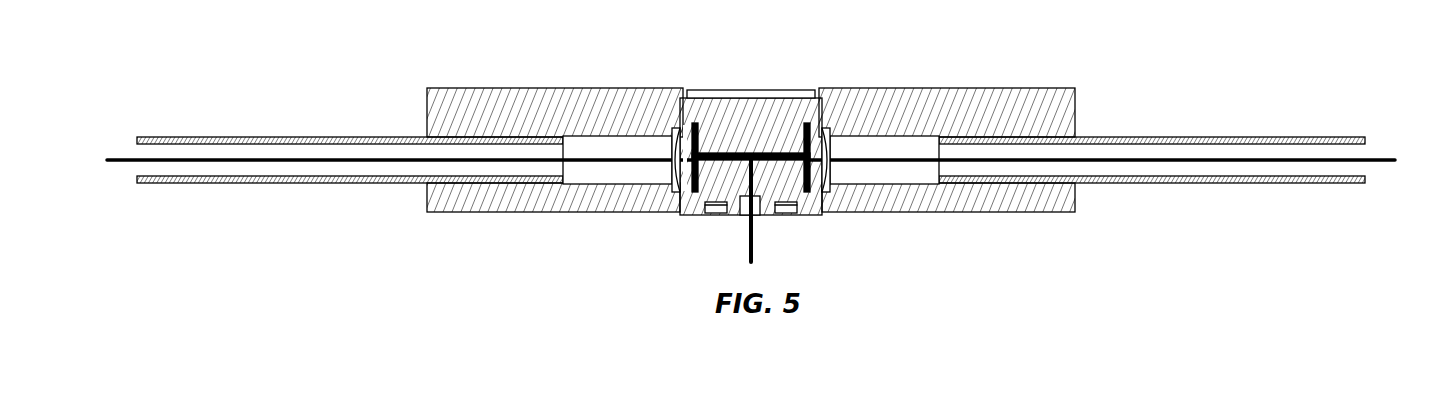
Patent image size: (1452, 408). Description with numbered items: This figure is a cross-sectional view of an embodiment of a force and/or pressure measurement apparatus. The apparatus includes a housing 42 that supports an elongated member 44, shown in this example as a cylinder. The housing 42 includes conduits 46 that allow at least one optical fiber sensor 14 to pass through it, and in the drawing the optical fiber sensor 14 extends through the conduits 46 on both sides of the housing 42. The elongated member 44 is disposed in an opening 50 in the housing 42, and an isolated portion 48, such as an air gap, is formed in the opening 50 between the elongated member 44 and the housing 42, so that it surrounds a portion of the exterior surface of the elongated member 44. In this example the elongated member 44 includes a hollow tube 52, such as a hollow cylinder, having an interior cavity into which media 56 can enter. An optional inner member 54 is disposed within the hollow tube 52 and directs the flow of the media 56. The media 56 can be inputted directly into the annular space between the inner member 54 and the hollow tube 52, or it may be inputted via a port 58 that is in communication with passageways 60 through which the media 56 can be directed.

The optical fiber sensor 14 is at (123, 160).
The housing 42 is at (1008, 88).
The elongated member 44 is at (683, 117).
The conduits 46 is at (236, 137).
The isolated portion 48 is at (830, 190).
The opening 50 is at (742, 150).
The hollow tube 52 is at (814, 216).
The inner member 54 is at (797, 100).
The media 56 is at (697, 124).
The port 58 is at (748, 217).
The passageways 60 is at (752, 150).